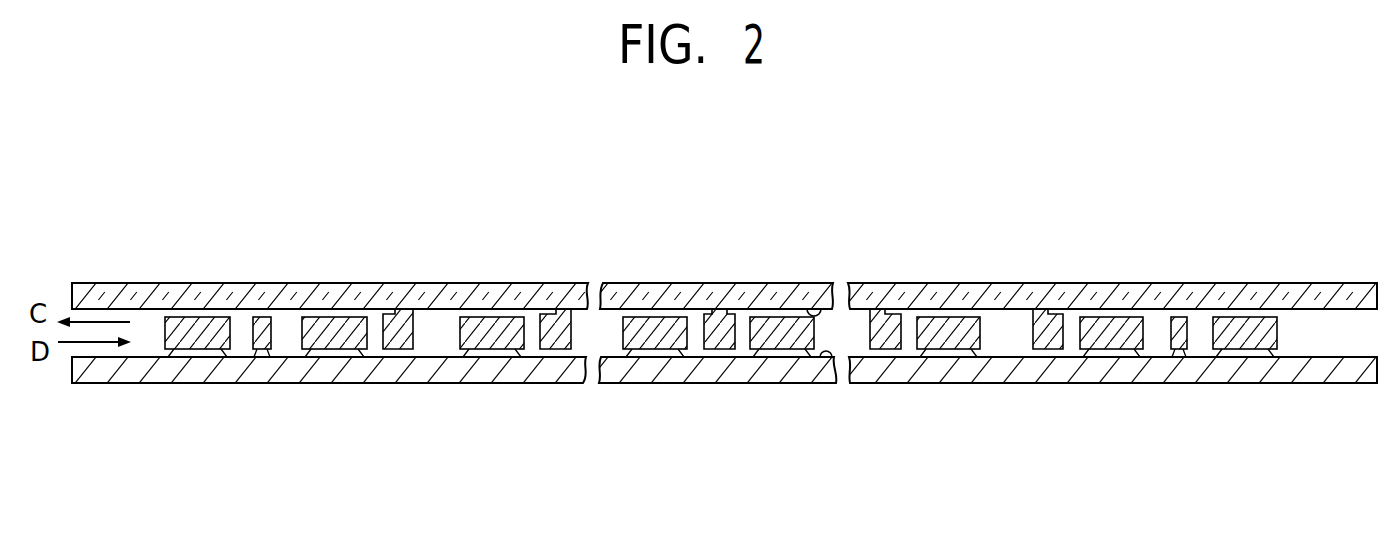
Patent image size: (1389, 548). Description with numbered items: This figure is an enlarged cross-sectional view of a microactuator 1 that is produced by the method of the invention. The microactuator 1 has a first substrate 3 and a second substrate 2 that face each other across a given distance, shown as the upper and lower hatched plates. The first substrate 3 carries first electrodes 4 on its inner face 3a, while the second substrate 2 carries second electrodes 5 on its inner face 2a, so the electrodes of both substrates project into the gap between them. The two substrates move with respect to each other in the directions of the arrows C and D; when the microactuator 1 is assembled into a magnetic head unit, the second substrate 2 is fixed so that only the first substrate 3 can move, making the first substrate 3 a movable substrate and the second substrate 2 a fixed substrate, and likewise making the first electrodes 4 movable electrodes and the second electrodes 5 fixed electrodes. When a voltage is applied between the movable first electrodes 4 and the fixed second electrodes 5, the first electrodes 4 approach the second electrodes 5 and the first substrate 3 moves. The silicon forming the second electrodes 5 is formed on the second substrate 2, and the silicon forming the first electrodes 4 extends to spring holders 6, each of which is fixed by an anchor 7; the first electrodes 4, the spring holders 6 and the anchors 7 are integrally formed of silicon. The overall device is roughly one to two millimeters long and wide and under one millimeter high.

The microactuator 1 is at (549, 270).
The second substrate 2 is at (517, 370).
The inner face of the second substrate 2a is at (828, 357).
The first substrate 3 is at (654, 296).
The inner face of the first substrate 3a is at (815, 308).
The first electrodes 4 is at (402, 323).
The second electrodes 5 is at (345, 335).
The spring holders 6 is at (262, 335).
The anchors 7 is at (203, 335).